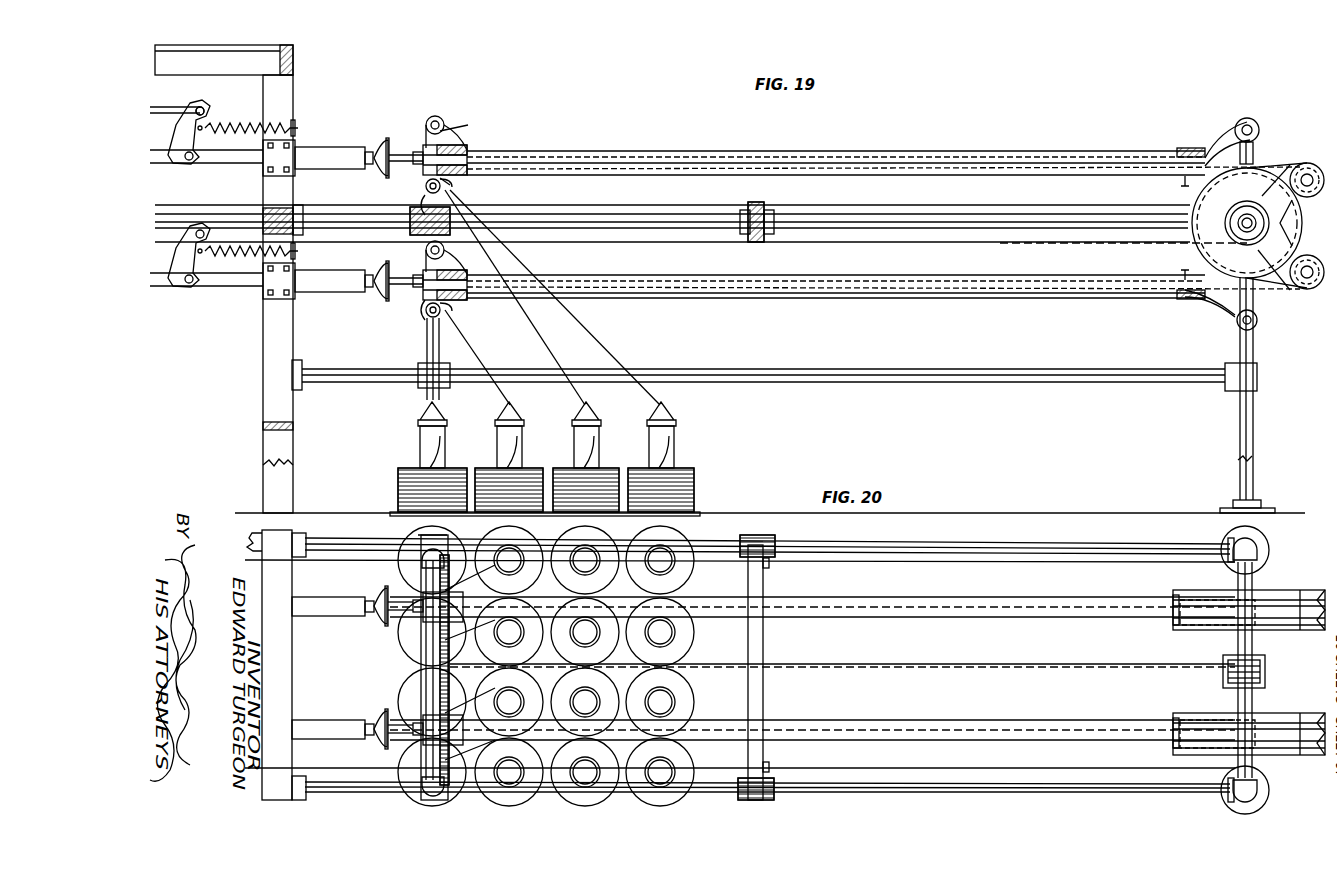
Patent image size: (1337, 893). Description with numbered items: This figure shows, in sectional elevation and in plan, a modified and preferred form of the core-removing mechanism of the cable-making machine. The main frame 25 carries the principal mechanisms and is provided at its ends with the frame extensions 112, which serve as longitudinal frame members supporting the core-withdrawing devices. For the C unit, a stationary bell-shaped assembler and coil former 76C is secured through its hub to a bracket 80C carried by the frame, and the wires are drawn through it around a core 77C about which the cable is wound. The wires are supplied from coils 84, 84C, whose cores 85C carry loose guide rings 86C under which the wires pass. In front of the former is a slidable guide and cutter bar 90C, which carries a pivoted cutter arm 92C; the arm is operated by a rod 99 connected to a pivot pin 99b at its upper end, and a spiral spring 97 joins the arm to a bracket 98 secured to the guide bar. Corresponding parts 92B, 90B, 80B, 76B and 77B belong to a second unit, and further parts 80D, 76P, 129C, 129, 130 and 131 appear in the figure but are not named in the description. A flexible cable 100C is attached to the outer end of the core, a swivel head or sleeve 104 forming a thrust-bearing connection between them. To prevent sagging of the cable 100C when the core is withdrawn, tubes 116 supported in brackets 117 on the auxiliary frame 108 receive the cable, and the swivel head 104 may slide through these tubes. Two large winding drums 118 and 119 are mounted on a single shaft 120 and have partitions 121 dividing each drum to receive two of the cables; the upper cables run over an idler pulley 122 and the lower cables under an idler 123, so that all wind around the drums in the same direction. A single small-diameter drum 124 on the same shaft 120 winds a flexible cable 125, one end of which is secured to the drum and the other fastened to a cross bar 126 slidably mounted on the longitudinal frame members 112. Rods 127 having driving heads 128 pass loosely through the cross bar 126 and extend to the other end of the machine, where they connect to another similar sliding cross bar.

In FIG. 19, the main frame 25 is at (280, 62).
In FIG. 20, the main frame 25 is at (278, 647).
In FIG. 19, the rod 99 is at (160, 107).
In FIG. 19, the pivot pin 99b is at (211, 95).
In FIG. 19, the cutter arm 92C is at (205, 118).
In FIG. 19, the spiral spring 97 is at (275, 125).
In FIG. 19, the slidable guide and cutter bar 90C is at (230, 162).
In FIG. 19, the bracket 80C is at (325, 150).
In FIG. 20, the bracket 80C is at (342, 585).
In FIG. 19, the assembler and coil former 76C is at (382, 140).
In FIG. 20, the assembler and coil former 76C is at (380, 590).
In FIG. 19, the core 77C is at (410, 148).
In FIG. 19, the brackets 117 is at (1205, 155).
In FIG. 19, the sleeve (swivel head) 104 is at (467, 150).
In FIG. 19, the tubes 116 is at (880, 150).
In FIG. 19, the flexible cable 100C is at (970, 160).
In FIG. 20, the flexible cable 100C is at (835, 726).
In FIG. 19, the pulley 129C is at (425, 187).
In FIG. 19, the guide 131 is at (423, 203).
In FIG. 20, the guide 131 is at (418, 650).
In FIG. 19, the cord 130 is at (448, 188).
In FIG. 20, the cord 130 is at (450, 680).
In FIG. 19, the rods 127 is at (648, 205).
In FIG. 20, the rods 127 is at (710, 565).
In FIG. 19, the frame extensions (longitudinal frame members) 112 is at (885, 213).
In FIG. 20, the frame extensions (longitudinal frame members) 112 is at (930, 542).
In FIG. 19, the cross bar 126 is at (775, 215).
In FIG. 20, the cross bar 126 is at (762, 590).
In FIG. 19, the flexible cable 125 is at (1032, 243).
In FIG. 20, the flexible cable 125 is at (1020, 670).
In FIG. 19, the lever 92B is at (205, 240).
In FIG. 19, the bracket 98 is at (298, 258).
In FIG. 19, the rod 90B is at (230, 285).
In FIG. 19, the cylinder 80B is at (318, 292).
In FIG. 19, the cone coupling 76B is at (382, 262).
In FIG. 19, the bearing bracket 77B is at (410, 270).
In FIG. 19, the pulley 129 is at (425, 311).
In FIG. 19, the auxiliary frame 108 is at (425, 345).
In FIG. 20, the auxiliary frame 108 is at (1245, 670).
In FIG. 19, the idler pulley 122 is at (1300, 172).
In FIG. 19, the idler 123 is at (1290, 285).
In FIG. 19, the winding drum 118 is at (1205, 252).
In FIG. 20, the winding drum 118 is at (1285, 575).
In FIG. 19, the small diameter drum 124 is at (1225, 222).
In FIG. 20, the small diameter drum 124 is at (1266, 660).
In FIG. 19, the shaft 120 is at (1245, 232).
In FIG. 19, the coil 84 is at (408, 484).
In FIG. 19, the coils 84C is at (585, 490).
In FIG. 20, the coils 84C is at (695, 632).
In FIG. 19, the cores 85C is at (592, 445).
In FIG. 20, the cores 85C is at (665, 637).
In FIG. 19, the loose guide rings 86C is at (592, 412).
In FIG. 20, the loose guide rings 86C is at (662, 640).
In FIG. 20, the cylinder 80D is at (328, 708).
In FIG. 20, the cone coupling 76P is at (380, 712).
In FIG. 20, the driving heads 128 is at (770, 563).
In FIG. 20, the winding drum 119 is at (1270, 715).
In FIG. 20, the partitions 121 is at (1205, 612).